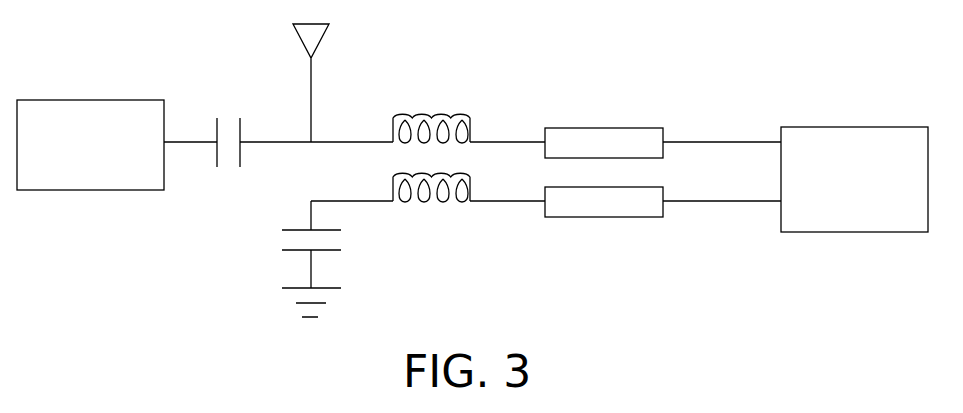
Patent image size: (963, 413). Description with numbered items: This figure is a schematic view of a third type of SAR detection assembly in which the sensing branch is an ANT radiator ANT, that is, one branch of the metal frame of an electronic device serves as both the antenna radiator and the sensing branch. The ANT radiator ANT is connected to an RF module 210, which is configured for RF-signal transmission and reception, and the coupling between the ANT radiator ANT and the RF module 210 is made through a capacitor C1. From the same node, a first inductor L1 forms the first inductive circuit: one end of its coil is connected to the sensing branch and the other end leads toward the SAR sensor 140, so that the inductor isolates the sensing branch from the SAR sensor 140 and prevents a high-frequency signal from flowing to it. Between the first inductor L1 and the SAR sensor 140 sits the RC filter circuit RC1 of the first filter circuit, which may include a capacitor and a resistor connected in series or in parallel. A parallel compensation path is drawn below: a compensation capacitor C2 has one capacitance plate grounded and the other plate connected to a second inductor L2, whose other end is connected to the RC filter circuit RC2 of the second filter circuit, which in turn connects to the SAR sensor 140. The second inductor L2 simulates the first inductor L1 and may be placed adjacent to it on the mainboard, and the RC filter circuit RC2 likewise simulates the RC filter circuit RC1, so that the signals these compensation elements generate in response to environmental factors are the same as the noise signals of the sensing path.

The RF module 210 is at (78, 100).
The SAR sensor 140 is at (847, 127).
The capacitor C1 is at (231, 125).
The compensation capacitor C2 is at (330, 259).
The first inductor L1 is at (431, 118).
The second inductor L2 is at (431, 206).
The RC filter circuit RC1 is at (604, 143).
The RC filter circuit RC2 is at (604, 202).
The ANT radiator ANT is at (335, 83).